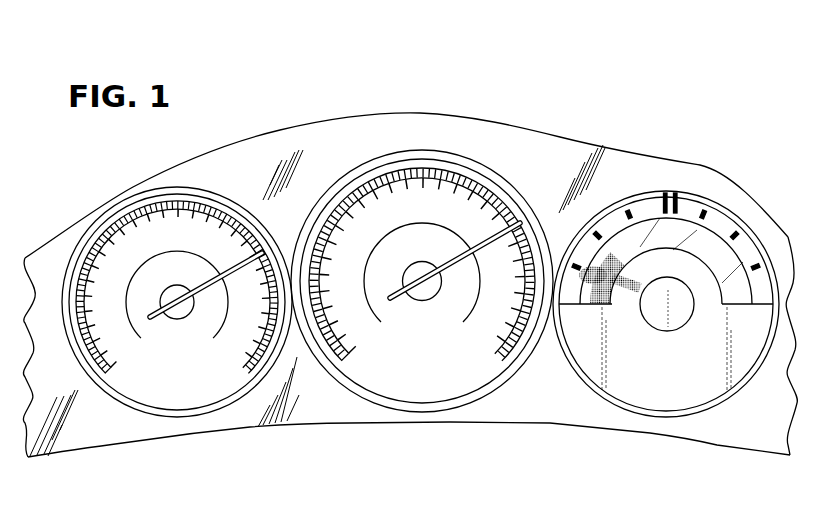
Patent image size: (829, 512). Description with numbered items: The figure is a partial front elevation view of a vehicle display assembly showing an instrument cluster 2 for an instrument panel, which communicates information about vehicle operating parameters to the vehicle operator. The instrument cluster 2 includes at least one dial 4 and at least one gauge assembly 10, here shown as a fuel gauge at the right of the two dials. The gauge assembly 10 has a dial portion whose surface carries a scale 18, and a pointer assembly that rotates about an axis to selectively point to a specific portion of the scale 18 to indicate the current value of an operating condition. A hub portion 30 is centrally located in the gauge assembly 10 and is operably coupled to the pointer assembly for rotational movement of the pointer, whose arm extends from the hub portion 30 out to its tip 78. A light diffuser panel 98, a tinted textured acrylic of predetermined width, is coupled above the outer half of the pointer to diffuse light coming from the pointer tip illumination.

The instrument cluster 2 is at (537, 86).
The dial 4 is at (200, 192).
The gauge assembly 10 is at (733, 188).
The scale 18 is at (570, 312).
The hub portion 30 is at (688, 323).
The tip 78 is at (583, 268).
The light diffuser panel 98 is at (684, 227).